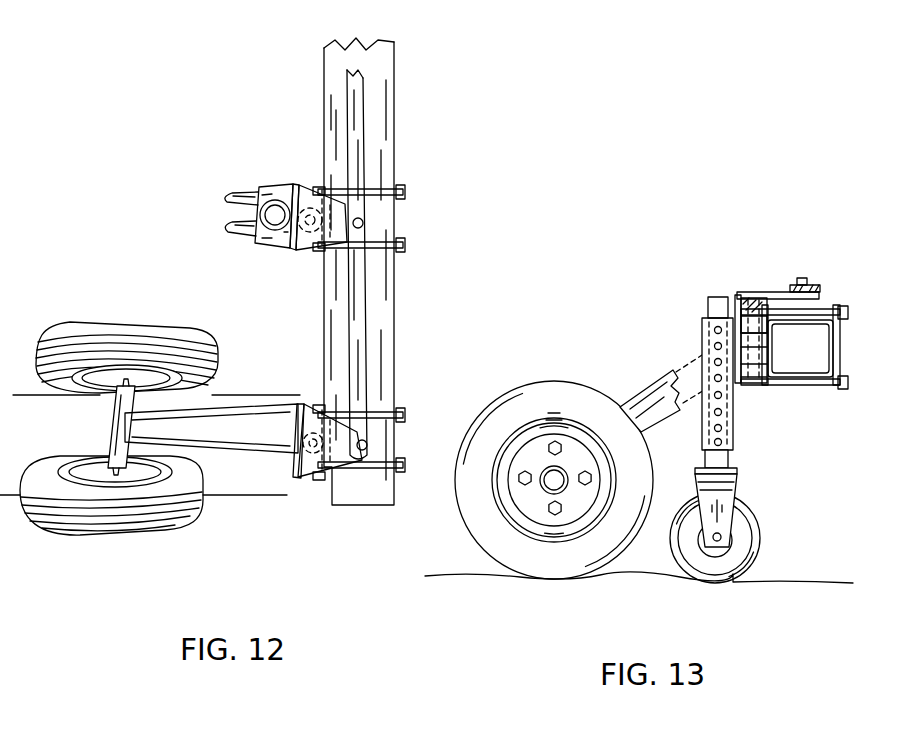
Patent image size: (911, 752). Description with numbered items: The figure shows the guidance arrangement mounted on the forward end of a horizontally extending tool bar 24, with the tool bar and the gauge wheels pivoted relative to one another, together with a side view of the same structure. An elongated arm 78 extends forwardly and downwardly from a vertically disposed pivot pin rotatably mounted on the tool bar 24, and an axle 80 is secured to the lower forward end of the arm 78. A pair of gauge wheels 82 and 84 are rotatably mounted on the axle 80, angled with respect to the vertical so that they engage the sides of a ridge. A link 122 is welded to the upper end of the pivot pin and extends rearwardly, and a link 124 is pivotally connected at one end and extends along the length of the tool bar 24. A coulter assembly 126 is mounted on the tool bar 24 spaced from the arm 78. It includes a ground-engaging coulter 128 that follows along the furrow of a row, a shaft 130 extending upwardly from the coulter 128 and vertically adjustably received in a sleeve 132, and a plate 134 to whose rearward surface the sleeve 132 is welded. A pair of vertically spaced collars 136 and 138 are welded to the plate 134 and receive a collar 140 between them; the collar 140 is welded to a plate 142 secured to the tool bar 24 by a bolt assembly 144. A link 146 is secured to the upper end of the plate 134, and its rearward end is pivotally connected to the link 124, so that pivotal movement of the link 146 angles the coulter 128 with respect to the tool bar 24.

In FIG. 12, the tool bar 24 is at (380, 115).
In FIG. 13, the tool bar 24 is at (817, 370).
In FIG. 12, the elongated arm 78 is at (227, 438).
In FIG. 13, the elongated arm 78 is at (647, 383).
In FIG. 12, the axle 80 is at (113, 428).
In FIG. 12, the gauge wheel 82 is at (135, 320).
In FIG. 12, the gauge wheel 84 is at (163, 533).
In FIG. 13, the gauge wheel 84 is at (530, 385).
In FIG. 12, the link 122 is at (305, 480).
In FIG. 12, the link 124 is at (357, 162).
In FIG. 13, the link 124 is at (813, 285).
In FIG. 12, the coulter assembly 126 is at (250, 173).
In FIG. 13, the coulter assembly 126 is at (660, 537).
In FIG. 12, the coulter 128 is at (242, 238).
In FIG. 13, the coulter 128 is at (700, 573).
In FIG. 13, the shaft 130 is at (728, 455).
In FIG. 12, the sleeve 132 is at (270, 197).
In FIG. 13, the sleeve 132 is at (703, 330).
In FIG. 12, the plate 134 is at (297, 185).
In FIG. 13, the plate 134 is at (738, 383).
In FIG. 13, the collar 136 is at (747, 318).
In FIG. 13, the collar 138 is at (750, 383).
In FIG. 13, the collar 140 is at (753, 350).
In FIG. 13, the plate 142 is at (763, 338).
In FIG. 13, the bolt assembly 144 is at (822, 310).
In FIG. 12, the link 146 is at (308, 243).